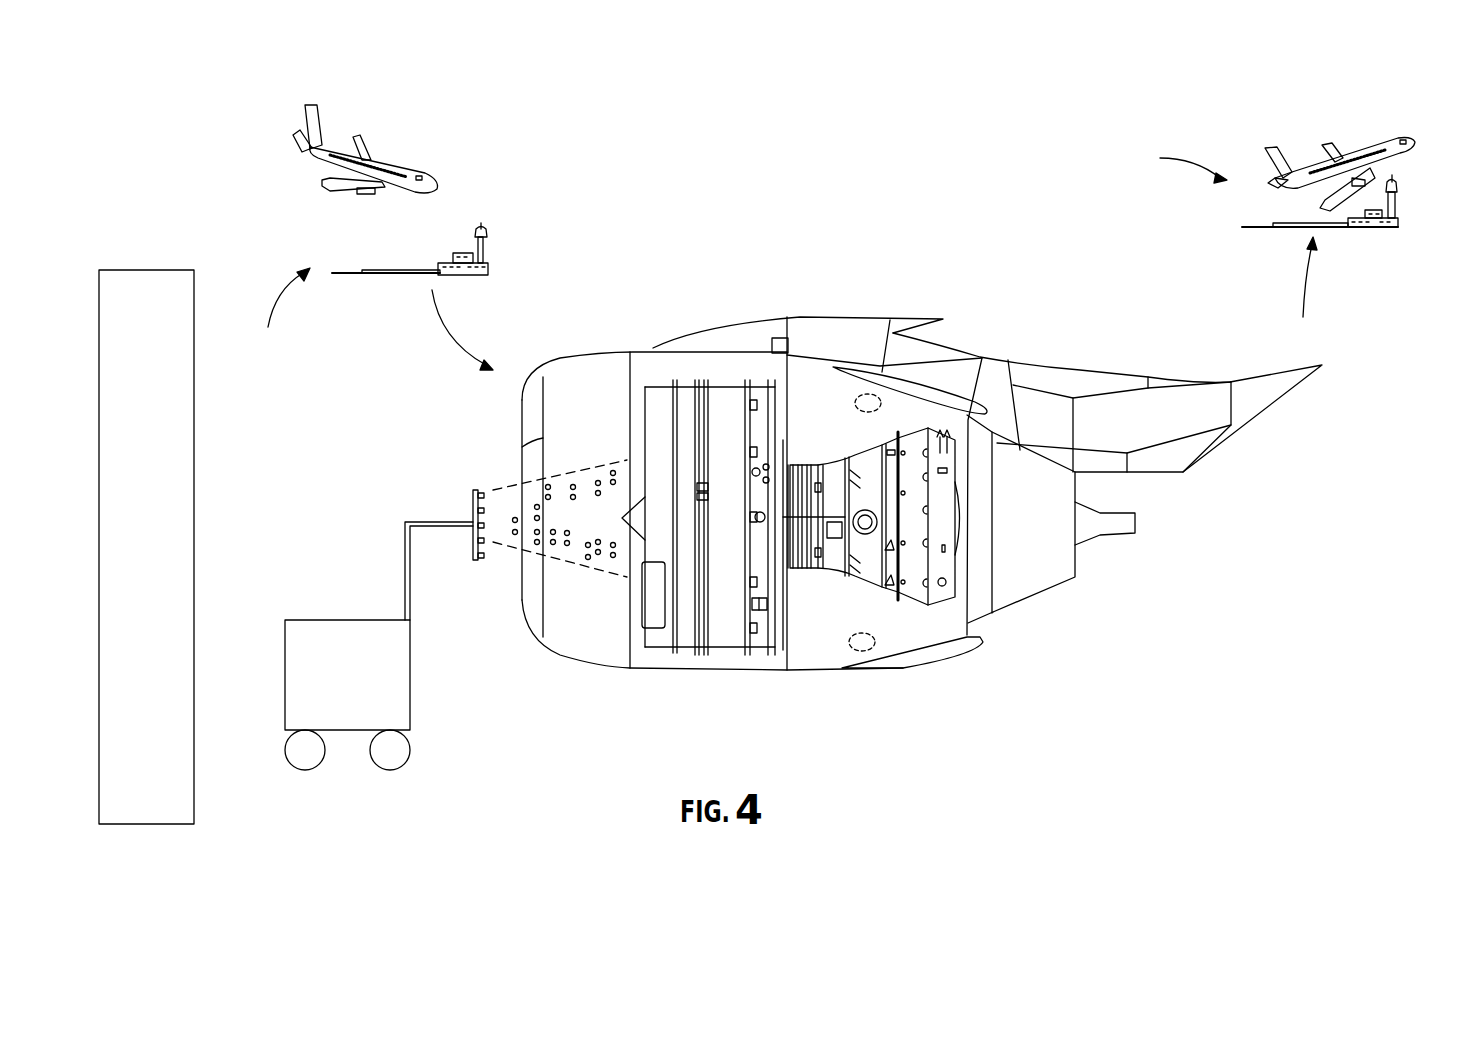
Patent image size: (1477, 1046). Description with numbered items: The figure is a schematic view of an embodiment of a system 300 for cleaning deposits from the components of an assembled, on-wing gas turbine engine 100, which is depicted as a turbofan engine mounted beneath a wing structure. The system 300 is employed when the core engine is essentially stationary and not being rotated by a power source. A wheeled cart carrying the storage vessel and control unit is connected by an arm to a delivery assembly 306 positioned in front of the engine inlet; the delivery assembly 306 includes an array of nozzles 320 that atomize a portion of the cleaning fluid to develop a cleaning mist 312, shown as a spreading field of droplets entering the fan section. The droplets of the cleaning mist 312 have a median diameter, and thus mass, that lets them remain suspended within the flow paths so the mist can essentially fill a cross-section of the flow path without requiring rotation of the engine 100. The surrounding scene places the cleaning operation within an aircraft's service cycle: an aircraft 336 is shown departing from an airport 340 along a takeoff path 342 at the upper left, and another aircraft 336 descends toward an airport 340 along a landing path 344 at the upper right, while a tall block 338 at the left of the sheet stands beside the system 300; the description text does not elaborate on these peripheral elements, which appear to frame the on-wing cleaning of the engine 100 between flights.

The gas turbine engine 100 is at (1030, 637).
The system for cleaning deposits 300 is at (333, 507).
The delivery assembly 306 is at (477, 505).
The cleaning mist 312 is at (587, 545).
The array of nozzles 320 is at (493, 490).
The aircraft 336 is at (412, 168).
The remote computing system 338 is at (157, 287).
The airport 340 is at (490, 255).
The takeoff 342 is at (370, 319).
The landing 344 is at (1219, 230).